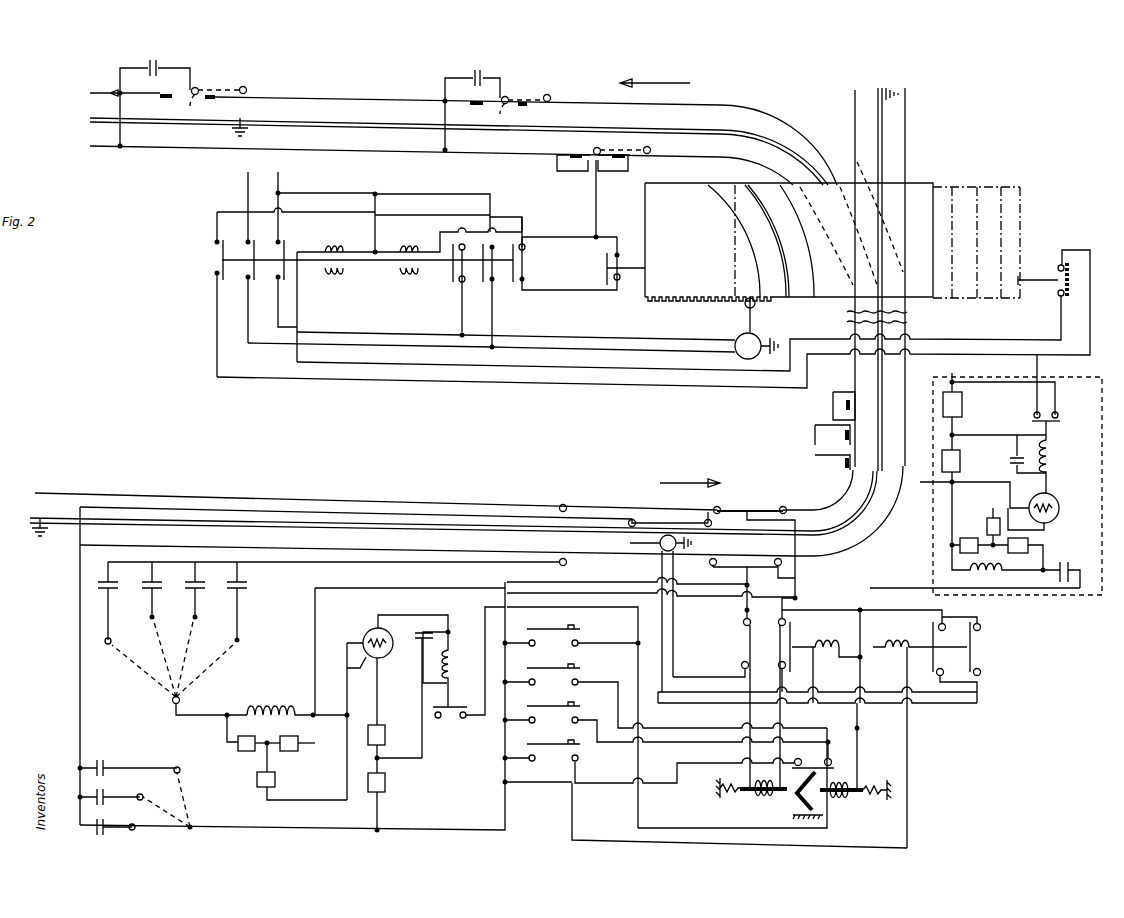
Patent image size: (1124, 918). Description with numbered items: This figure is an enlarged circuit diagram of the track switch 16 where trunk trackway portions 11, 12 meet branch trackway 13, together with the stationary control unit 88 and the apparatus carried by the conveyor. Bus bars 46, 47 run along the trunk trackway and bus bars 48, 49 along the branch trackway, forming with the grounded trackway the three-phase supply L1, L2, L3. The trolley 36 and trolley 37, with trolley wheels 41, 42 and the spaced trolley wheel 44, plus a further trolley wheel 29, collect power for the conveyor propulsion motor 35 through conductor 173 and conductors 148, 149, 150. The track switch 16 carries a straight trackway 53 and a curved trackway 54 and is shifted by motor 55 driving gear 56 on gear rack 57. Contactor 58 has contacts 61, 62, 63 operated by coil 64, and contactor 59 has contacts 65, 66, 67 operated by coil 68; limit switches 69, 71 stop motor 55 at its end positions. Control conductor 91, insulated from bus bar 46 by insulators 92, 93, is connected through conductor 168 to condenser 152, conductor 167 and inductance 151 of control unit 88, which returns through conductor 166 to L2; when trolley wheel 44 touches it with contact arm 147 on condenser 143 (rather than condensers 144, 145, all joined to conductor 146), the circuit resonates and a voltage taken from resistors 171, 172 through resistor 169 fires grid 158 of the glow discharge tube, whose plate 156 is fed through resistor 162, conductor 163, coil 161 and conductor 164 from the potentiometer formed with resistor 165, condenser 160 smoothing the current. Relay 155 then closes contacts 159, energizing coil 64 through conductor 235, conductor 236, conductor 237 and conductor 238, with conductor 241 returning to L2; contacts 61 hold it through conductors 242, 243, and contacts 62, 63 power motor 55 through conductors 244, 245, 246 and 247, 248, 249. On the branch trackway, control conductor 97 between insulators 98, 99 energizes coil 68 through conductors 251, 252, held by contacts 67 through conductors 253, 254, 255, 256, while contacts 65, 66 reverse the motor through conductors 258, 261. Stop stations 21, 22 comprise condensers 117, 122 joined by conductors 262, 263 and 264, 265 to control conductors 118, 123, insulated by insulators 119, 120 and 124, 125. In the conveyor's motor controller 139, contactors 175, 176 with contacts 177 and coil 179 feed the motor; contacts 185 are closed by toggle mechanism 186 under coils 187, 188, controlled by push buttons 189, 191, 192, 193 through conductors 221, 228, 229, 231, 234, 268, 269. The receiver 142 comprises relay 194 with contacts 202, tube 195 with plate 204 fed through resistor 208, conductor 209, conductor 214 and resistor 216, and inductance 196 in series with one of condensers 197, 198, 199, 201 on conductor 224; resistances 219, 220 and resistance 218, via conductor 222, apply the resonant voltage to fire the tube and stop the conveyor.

The trunk trackway portion 11 is at (583, 515).
The trunk trackway portion 12 is at (883, 150).
The branch trackway 13 is at (752, 120).
The track switch 16 is at (918, 182).
The stop station 21 is at (522, 80).
The stop station 22 is at (209, 79).
The trolley wheel 29 is at (396, 505).
The conveyor propulsion motor 35 is at (653, 613).
The trolley 36 is at (737, 589).
The trolley 37 is at (785, 544).
The trolley wheel 41 is at (668, 325).
The trolley wheel 42 is at (676, 326).
The trolley wheel 44 is at (376, 495).
The bus bar 46 is at (850, 108).
The bus bar 47 is at (767, 331).
The bus bar 48 is at (393, 152).
The bus bar 49 is at (292, 95).
The straight trackway 53 is at (890, 284).
The curved trackway 54 is at (790, 272).
The three-phase motor 55 is at (756, 334).
The gear 56 is at (744, 306).
The gear rack 57 is at (680, 298).
The contactor 58 is at (318, 239).
The contactor 59 is at (425, 243).
The pair of normally open contacts 61 is at (218, 255).
The pair of normally open contacts 62 is at (238, 291).
The pair of normally open contacts 63 is at (275, 283).
The coil 64 is at (331, 270).
The pair of normally open contacts 65 is at (468, 288).
The pair of normally open contacts 66 is at (498, 297).
The pair of normally open contacts 67 is at (527, 268).
The coil 68 is at (409, 270).
The limit switch 69 is at (626, 278).
The limit switch 71 is at (1048, 290).
The control unit 88 is at (1017, 488).
The control conductor 91 is at (815, 432).
The insulator 92 is at (815, 457).
The insulator 93 is at (830, 406).
The control conductor 97 is at (582, 200).
The insulator 98 is at (565, 166).
The insulator 99 is at (631, 164).
The condenser 117 is at (471, 75).
The control conductor 118 is at (518, 85).
The insulator 119 is at (471, 112).
The insulator 120 is at (535, 113).
The condenser 122 is at (151, 97).
The control conductor 123 is at (180, 83).
The insulator 124 is at (161, 105).
The insulator 125 is at (233, 105).
The propulsion motor controller 139 is at (915, 762).
The receiver 142 is at (262, 608).
The condenser 143 is at (116, 819).
The condenser 144 is at (111, 790).
The condenser 145 is at (129, 760).
The conductor 146 is at (80, 688).
The moving contact arm 147 is at (170, 810).
The conductor 148 is at (294, 712).
The conductor 149 is at (500, 580).
The conductor 150 is at (790, 542).
The inductance 151 is at (997, 571).
The condenser 152 is at (1064, 561).
The relay 155 is at (1058, 432).
The plate 156 is at (1023, 491).
The control electrode or grid 158 is at (1060, 501).
The pair of contacts 159 is at (1031, 409).
The condenser 160 is at (1021, 455).
The coil 161 is at (1065, 457).
The resistor 162 is at (967, 421).
The conductor 163 is at (999, 443).
The conductor 164 is at (974, 494).
The resistor 165 is at (967, 499).
The conductor 166 is at (950, 515).
The conductor 167 is at (1059, 594).
The conductor 168 is at (975, 580).
The resistor 169 is at (1001, 526).
The resistor 171 is at (958, 548).
The resistor 172 is at (1027, 555).
The conductor 173 is at (660, 612).
The contactor 175 is at (838, 628).
The contactor 176 is at (925, 628).
The pair of contacts 177 is at (729, 677).
The coil 179 is at (864, 673).
The pair of contacts 185 is at (822, 748).
The over-center toggle mechanism 186 is at (811, 802).
The coil 187 is at (751, 720).
The coil 188 is at (859, 797).
The stop push button 189 is at (571, 629).
The automatic push button 191 is at (666, 690).
The forward push button 192 is at (667, 715).
The reverse push button 193 is at (649, 755).
The relay 194 is at (459, 667).
The electron tube 195 is at (425, 607).
The inductance 196 is at (287, 701).
The condenser 197 is at (121, 603).
The condenser 198 is at (165, 591).
The condenser 199 is at (207, 591).
The condenser 201 is at (254, 602).
The pair of normally open contacts 202 is at (470, 667).
The plate 204 is at (420, 658).
The resistor 208 is at (392, 801).
The conductor 209 is at (399, 698).
The conductor 214 is at (318, 640).
The resistor 216 is at (392, 715).
The resistance 218 is at (302, 771).
The resistance 219 is at (247, 752).
The resistance 220 is at (309, 744).
The conductor 221 is at (796, 708).
The conductor 222 is at (214, 729).
The conductor 224 is at (349, 570).
The conductor 228 is at (885, 640).
The conductor 229 is at (830, 607).
The conductor 231 is at (538, 798).
The conductor 234 is at (822, 582).
The conductor 235 is at (1020, 394).
The conductor 236 is at (1040, 365).
The conductor 237 is at (1085, 292).
The conductor 238 is at (975, 332).
The conductor 241 is at (326, 182).
The conductor 242 is at (212, 229).
The conductor 243 is at (680, 343).
The conductor 244 is at (240, 214).
The conductor 245 is at (486, 354).
The conductor 246 is at (653, 330).
The conductor 247 is at (304, 206).
The conductor 248 is at (516, 324).
The conductor 249 is at (569, 321).
The conductor 251 is at (618, 196).
The conductor 252 is at (548, 233).
The conductor 253 is at (448, 212).
The conductor 254 is at (506, 211).
The conductor 255 is at (563, 302).
The conductor 256 is at (623, 226).
The conductor 258 is at (455, 314).
The conductor 261 is at (506, 321).
The conductor 262 is at (488, 70).
The conductor 263 is at (463, 126).
The conductor 264 is at (178, 68).
The conductor 265 is at (125, 147).
The conductor 268 is at (739, 815).
The conductor 269 is at (879, 746).
The phase conductor L1 is at (516, 323).
The phase conductor L2 is at (487, 322).
The phase conductor L3 is at (221, 305).